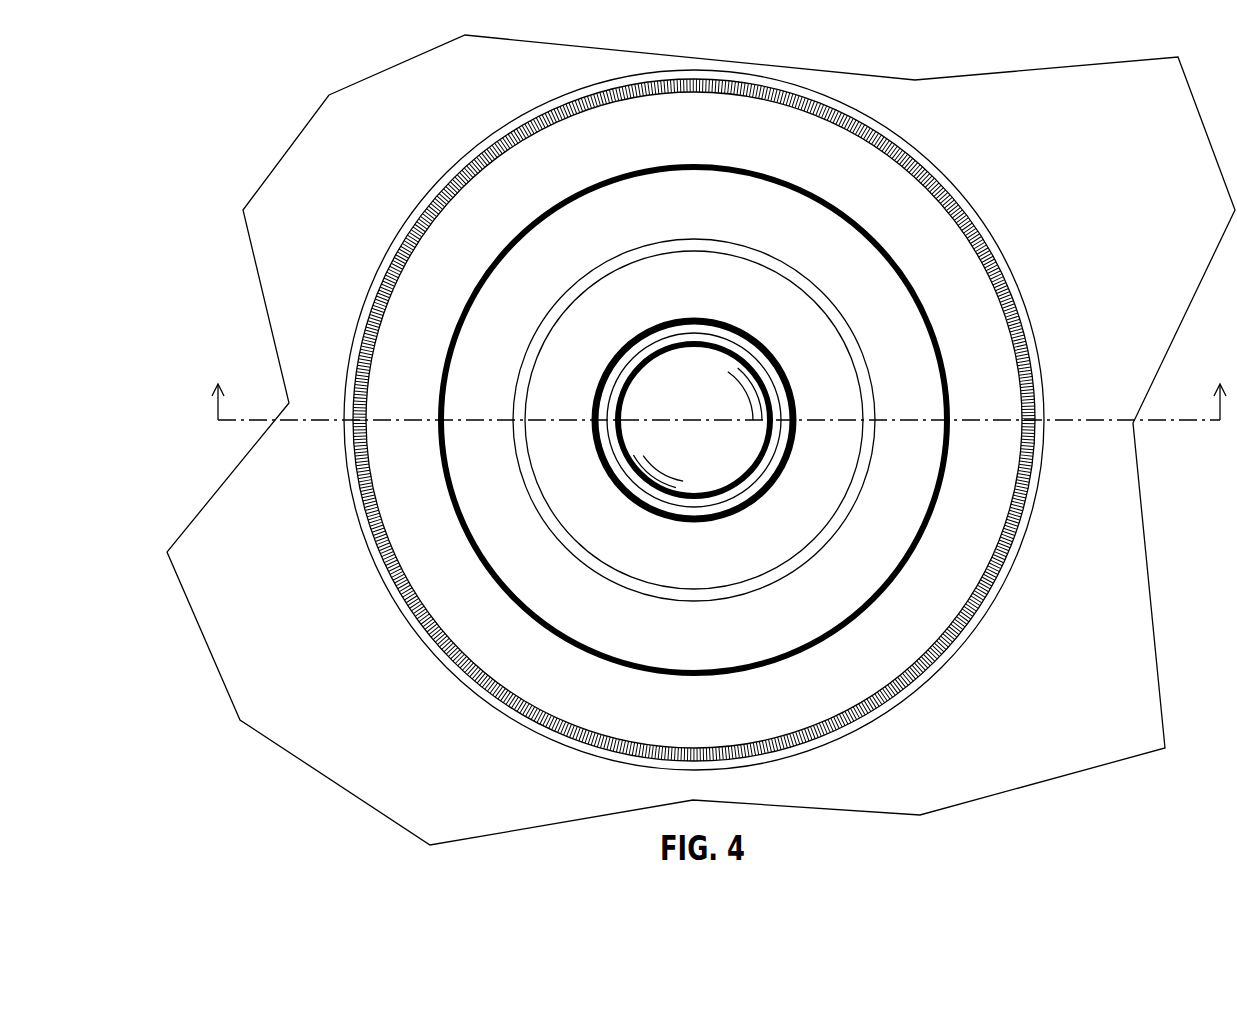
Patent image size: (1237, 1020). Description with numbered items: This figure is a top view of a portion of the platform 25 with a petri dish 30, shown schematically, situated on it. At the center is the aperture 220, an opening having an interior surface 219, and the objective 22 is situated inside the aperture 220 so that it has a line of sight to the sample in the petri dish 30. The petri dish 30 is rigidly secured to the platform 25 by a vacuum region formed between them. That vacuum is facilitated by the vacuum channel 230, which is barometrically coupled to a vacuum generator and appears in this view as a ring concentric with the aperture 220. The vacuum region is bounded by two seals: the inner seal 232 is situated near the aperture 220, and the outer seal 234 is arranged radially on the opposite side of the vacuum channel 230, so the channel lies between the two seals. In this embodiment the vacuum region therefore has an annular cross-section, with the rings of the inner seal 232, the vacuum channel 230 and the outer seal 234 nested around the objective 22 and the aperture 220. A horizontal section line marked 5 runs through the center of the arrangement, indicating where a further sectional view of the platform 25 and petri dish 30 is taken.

The section line 5- 5 is at (718, 387).
The objective 22 is at (708, 416).
The platform 25 is at (332, 207).
The petri dish 30 is at (368, 520).
The interior surface 219 is at (665, 497).
The aperture 220 is at (776, 396).
The vacuum channel 230 is at (552, 316).
The inner seal 232 is at (606, 356).
The outer seal 234 is at (517, 233).